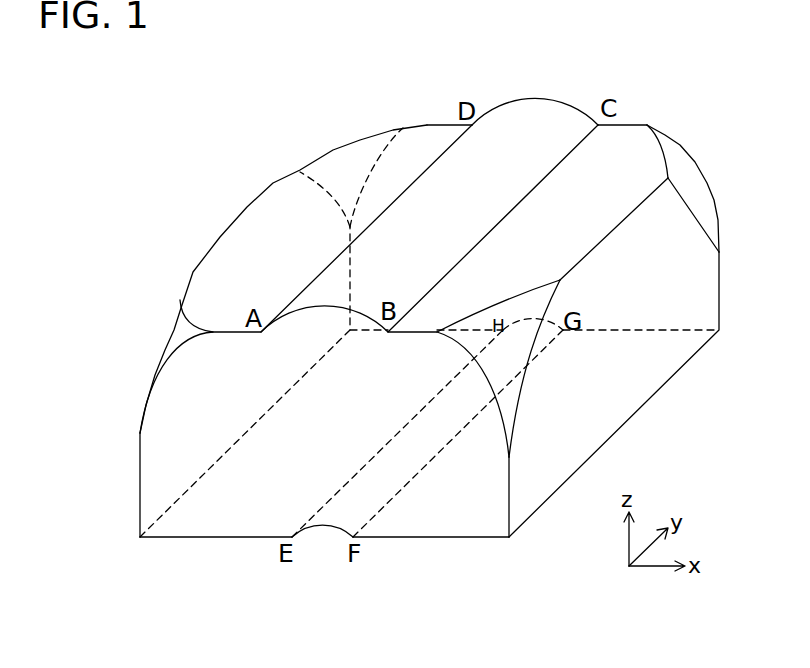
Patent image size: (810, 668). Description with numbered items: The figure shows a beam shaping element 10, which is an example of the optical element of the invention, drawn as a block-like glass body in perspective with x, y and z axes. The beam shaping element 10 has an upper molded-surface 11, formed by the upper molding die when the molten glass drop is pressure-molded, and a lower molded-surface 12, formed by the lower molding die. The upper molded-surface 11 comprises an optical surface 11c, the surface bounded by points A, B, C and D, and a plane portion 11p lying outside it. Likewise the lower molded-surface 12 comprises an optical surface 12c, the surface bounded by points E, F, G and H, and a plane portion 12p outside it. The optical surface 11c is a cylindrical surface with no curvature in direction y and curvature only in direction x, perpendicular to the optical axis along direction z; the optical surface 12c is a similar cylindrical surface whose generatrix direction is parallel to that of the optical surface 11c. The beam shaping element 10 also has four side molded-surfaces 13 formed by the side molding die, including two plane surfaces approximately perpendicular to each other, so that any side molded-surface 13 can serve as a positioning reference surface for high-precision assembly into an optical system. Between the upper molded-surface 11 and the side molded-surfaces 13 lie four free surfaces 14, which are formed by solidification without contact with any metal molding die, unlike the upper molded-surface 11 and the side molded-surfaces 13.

The beam shaping element 10 is at (237, 125).
The upper molded-surface 11 is at (468, 168).
The optical surface 11c is at (540, 115).
The plane portion 11p is at (522, 50).
The lower molded-surface 12 is at (351, 480).
The plane portion 12p is at (217, 538).
The optical surface 12c is at (427, 458).
The side molded-surface 13 is at (242, 470).
The free surface 14 is at (333, 150).